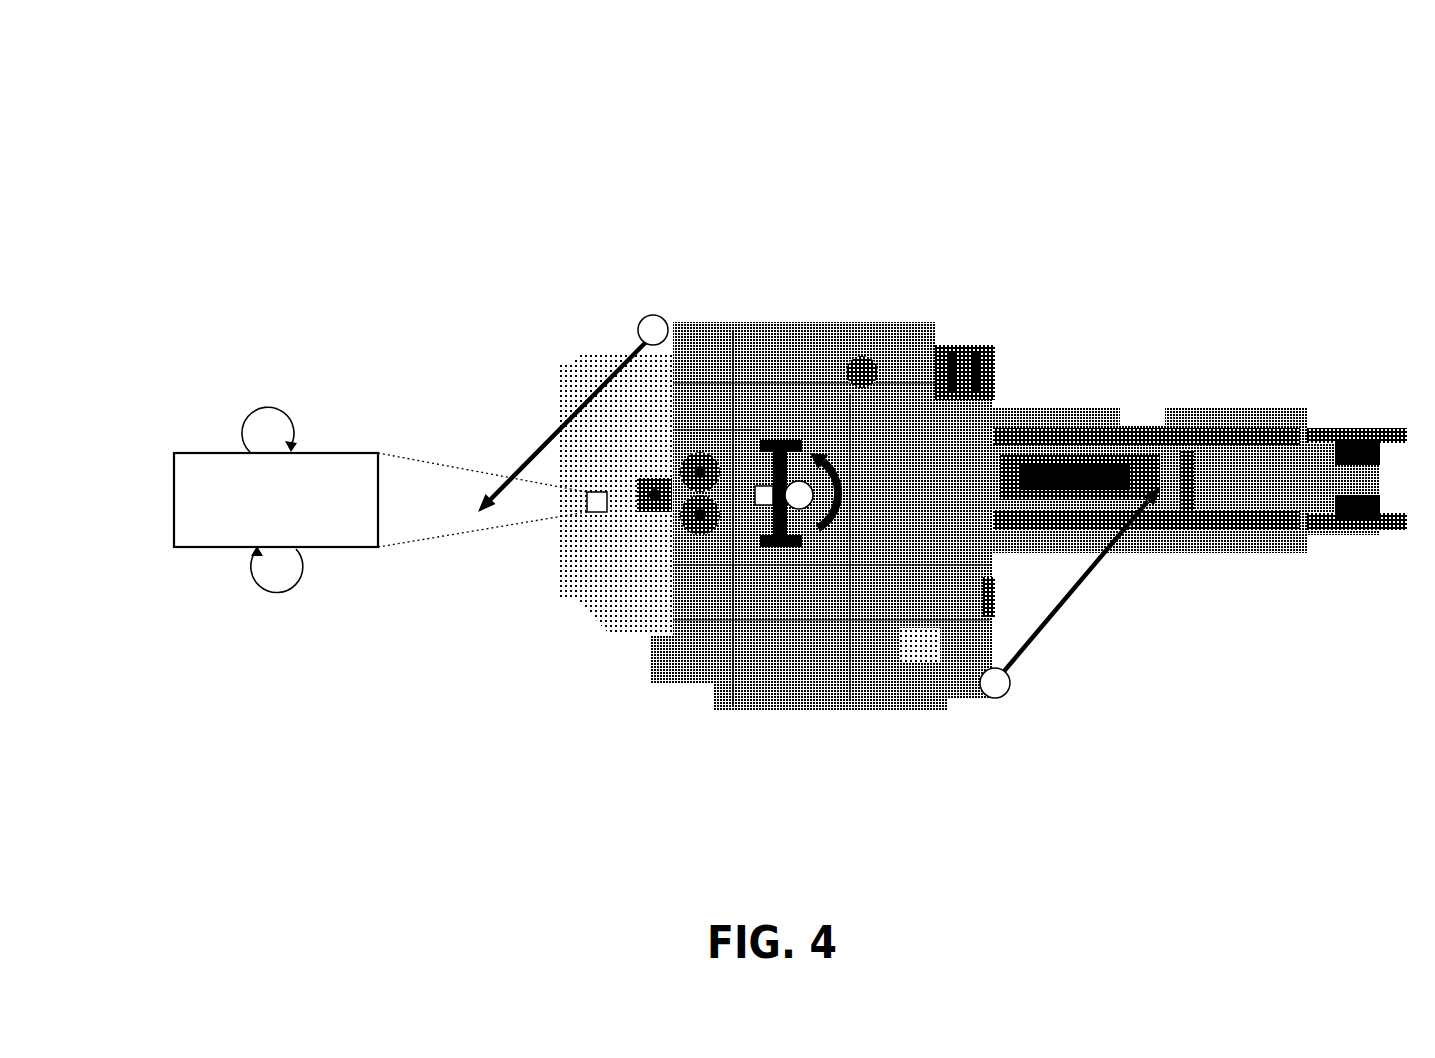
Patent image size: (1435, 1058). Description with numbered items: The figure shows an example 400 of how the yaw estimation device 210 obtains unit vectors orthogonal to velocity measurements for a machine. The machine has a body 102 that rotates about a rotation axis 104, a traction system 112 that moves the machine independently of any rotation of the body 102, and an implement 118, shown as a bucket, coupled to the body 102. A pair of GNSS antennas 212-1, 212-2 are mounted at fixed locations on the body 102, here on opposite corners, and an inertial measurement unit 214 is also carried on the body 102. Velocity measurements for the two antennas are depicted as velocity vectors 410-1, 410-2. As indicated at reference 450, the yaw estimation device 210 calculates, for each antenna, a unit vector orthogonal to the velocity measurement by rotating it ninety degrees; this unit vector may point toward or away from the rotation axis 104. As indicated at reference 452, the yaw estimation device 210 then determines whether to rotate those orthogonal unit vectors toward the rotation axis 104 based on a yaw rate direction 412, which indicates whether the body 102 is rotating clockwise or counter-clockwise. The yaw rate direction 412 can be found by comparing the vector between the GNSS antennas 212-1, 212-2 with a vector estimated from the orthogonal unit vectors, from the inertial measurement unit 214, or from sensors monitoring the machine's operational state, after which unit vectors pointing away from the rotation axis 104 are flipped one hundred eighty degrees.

The example 400 is at (238, 63).
The body 102 is at (860, 323).
The rotation axis 104 is at (799, 481).
The traction system 112 is at (968, 345).
The implement 118 is at (1318, 427).
The yaw estimation device 210 is at (595, 513).
The GNSS antenna 212-1 is at (992, 698).
The GNSS antenna 212-2 is at (647, 318).
The inertial measurement unit 214 is at (760, 506).
The velocity vector 410-1 is at (1083, 575).
The velocity vector 410-2 is at (572, 405).
The yaw rate direction 412 is at (833, 540).
The calculate unit vector orthogonal to velocity measurement 450 is at (287, 346).
The determine whether to rotate unit vectors towards rotation axis 452 is at (258, 621).